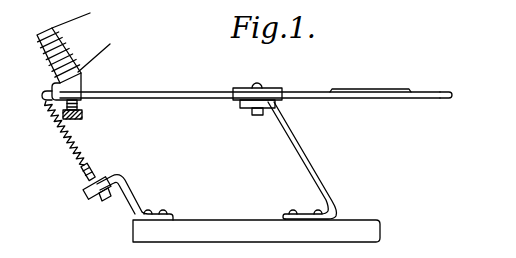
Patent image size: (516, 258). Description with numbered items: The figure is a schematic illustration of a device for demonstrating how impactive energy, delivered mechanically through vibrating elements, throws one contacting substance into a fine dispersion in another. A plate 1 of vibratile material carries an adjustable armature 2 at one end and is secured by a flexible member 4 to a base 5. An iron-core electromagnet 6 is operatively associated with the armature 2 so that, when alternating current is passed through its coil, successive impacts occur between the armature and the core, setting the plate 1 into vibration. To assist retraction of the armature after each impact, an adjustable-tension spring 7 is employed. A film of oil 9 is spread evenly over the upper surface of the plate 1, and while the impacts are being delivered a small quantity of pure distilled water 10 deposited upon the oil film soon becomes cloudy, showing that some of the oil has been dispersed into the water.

The plate 1 is at (303, 93).
The adjustable armature 2 is at (80, 82).
The flexible member 4 is at (310, 166).
The base 5 is at (272, 237).
The iron-core electromagnet 6 is at (48, 61).
The adjustable-tension spring 7 is at (66, 141).
The film of oil 9 is at (431, 93).
The distilled water 10 is at (407, 90).